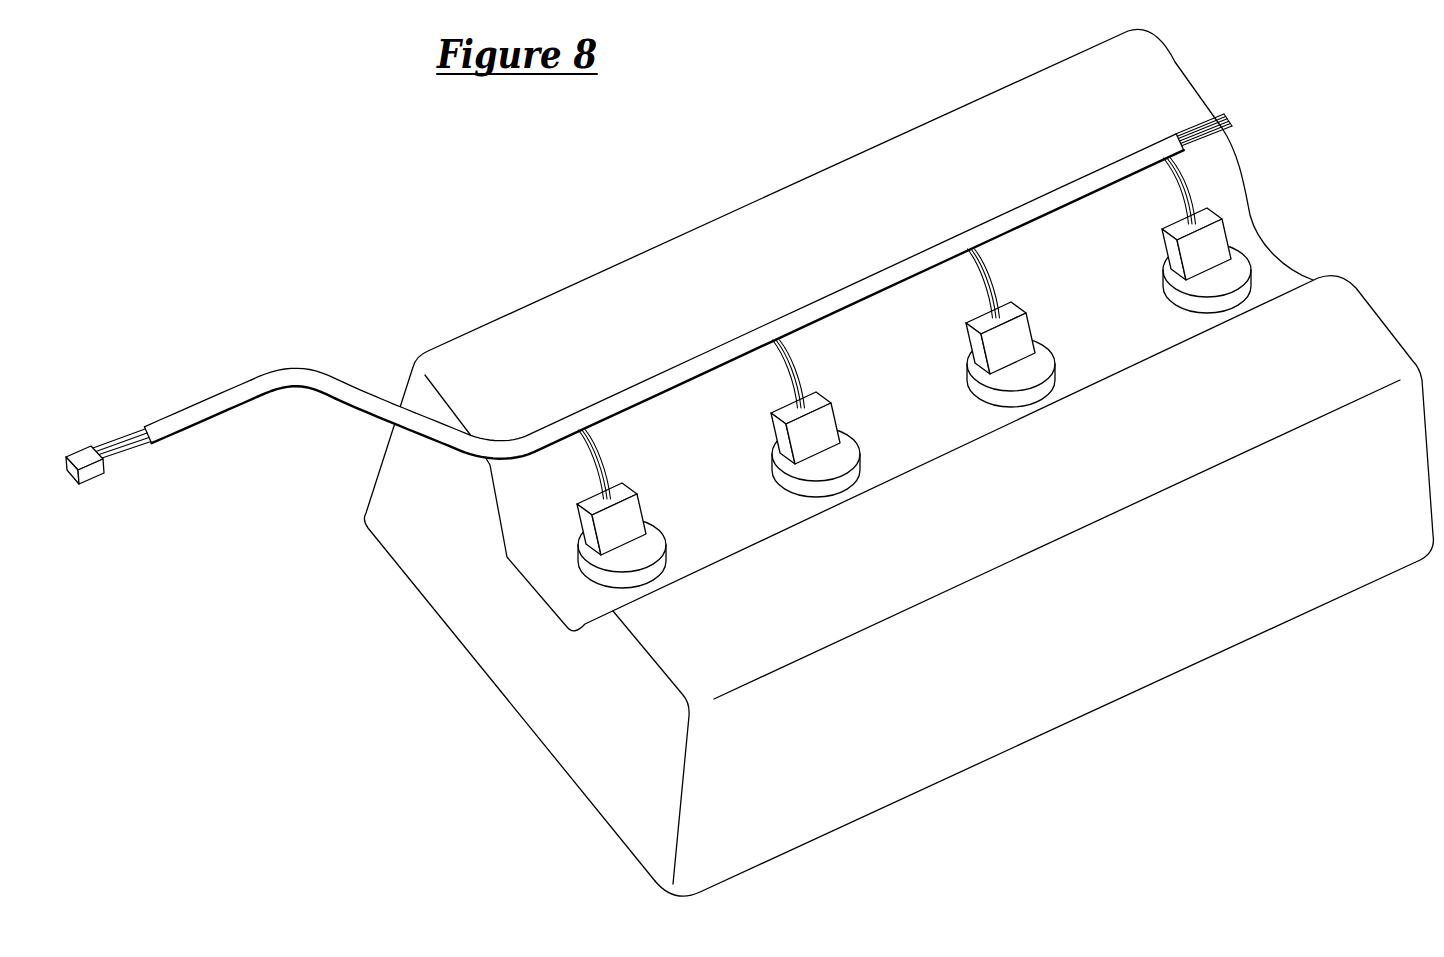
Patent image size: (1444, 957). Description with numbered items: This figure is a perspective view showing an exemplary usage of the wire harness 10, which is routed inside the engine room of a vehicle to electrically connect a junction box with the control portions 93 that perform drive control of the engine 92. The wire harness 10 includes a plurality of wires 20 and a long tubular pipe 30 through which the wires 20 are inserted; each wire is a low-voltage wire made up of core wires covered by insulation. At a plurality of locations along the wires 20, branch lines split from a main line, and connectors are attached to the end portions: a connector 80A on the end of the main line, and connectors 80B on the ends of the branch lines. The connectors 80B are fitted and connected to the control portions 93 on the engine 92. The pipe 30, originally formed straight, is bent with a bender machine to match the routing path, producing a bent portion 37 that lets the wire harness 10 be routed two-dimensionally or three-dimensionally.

The wire harness 10 is at (742, 430).
The wires 20 is at (122, 440).
The pipe 30 is at (688, 286).
The bent portion 37 is at (299, 371).
The connector 80A is at (92, 476).
The connectors 80B is at (577, 512).
The engine 92 is at (743, 217).
The control portions 93 is at (623, 558).